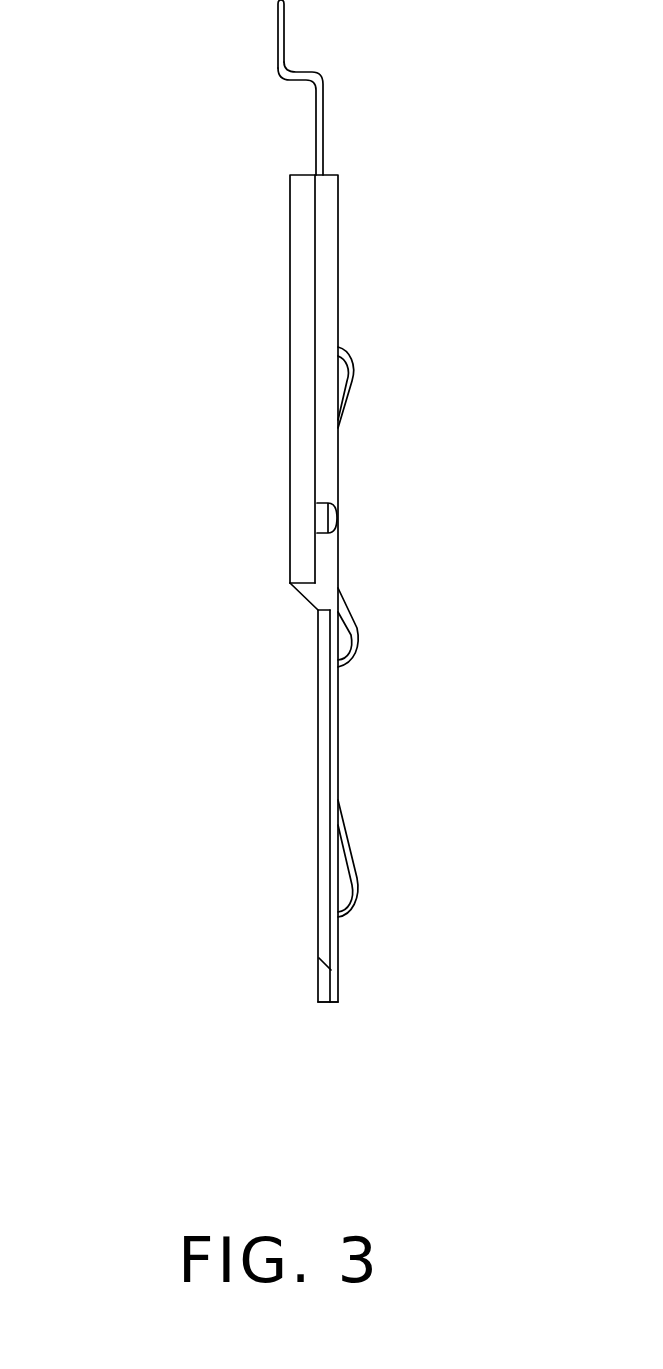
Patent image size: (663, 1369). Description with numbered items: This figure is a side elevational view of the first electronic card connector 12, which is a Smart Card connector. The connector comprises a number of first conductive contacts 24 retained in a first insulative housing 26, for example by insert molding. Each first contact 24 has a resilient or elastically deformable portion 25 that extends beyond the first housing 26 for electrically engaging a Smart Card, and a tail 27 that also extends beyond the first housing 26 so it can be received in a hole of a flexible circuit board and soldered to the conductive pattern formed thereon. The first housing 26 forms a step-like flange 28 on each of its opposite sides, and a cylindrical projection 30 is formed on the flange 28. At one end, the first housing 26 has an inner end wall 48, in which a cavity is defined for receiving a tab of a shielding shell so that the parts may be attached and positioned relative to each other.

The first electronic card connector 12 is at (88, 31).
The tail 27 is at (283, 25).
The first conductive contact 24 is at (325, 124).
The first insulative housing 26 is at (288, 423).
The step-like flange 28 is at (303, 483).
The cylindrical projection 30 is at (321, 522).
The resilient portion 25 is at (352, 872).
The inner end wall 48 is at (323, 1003).